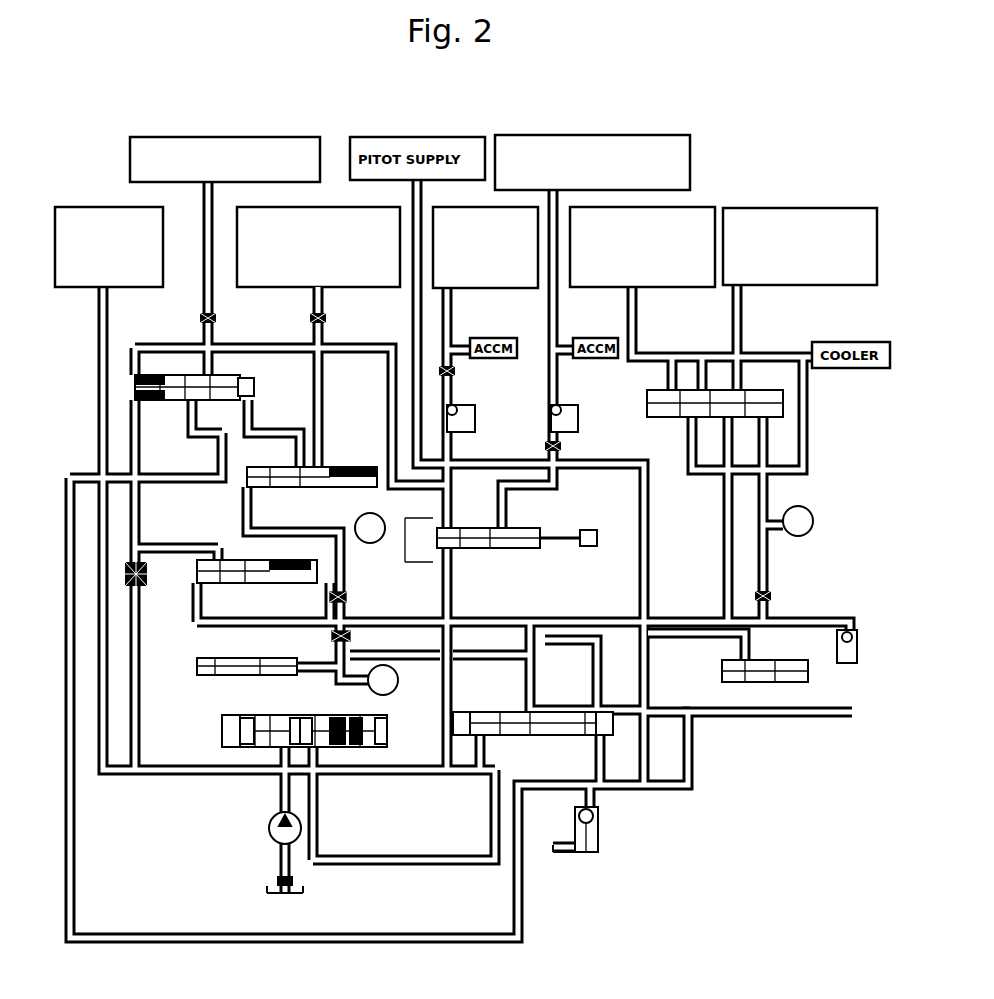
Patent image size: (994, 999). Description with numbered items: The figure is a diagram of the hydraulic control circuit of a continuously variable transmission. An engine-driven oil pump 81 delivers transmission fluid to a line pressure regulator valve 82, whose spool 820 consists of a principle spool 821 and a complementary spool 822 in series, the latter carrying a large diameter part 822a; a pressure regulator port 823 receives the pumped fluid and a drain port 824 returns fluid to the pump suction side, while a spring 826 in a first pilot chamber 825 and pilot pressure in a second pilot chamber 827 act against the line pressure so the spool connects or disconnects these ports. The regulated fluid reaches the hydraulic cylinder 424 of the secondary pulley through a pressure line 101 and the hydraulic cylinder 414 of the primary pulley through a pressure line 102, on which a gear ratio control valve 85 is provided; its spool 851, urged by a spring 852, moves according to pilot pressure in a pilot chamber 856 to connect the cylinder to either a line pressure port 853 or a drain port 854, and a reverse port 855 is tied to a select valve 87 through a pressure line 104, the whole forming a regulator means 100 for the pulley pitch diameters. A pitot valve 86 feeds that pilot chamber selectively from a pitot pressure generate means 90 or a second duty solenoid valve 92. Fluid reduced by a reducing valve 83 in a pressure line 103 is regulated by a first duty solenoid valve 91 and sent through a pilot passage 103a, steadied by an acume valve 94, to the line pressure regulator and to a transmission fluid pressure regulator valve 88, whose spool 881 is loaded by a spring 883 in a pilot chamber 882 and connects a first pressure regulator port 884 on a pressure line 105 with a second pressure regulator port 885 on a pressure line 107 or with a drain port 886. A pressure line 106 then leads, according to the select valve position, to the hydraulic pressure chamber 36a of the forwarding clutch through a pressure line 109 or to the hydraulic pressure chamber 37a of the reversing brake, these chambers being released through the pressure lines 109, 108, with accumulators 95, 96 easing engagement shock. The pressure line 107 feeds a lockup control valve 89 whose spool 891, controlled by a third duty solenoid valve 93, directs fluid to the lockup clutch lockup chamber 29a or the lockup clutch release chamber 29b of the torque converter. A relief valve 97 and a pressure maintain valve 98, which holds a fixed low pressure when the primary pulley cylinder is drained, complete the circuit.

The lockup clutch lockup chamber 29a is at (708, 207).
The lockup clutch release chamber 29b is at (788, 208).
The hydraulic pressure chamber 36a is at (626, 135).
The hydraulic pressure chamber 37a is at (462, 288).
The oil pump 81 is at (272, 836).
The line pressure regulator valve 82 is at (301, 752).
The reducing valve 83 is at (305, 562).
The gear ratio control valve 85 is at (179, 366).
The pitot valve 86 is at (353, 467).
The select valve 87 is at (520, 549).
The transmission fluid pressure regulator valve 88 is at (514, 715).
The lockup control valve 89 is at (790, 384).
The pitot pressure generate means 90 is at (336, 207).
The first duty solenoid valve 91 is at (394, 667).
The second duty solenoid valve 92 is at (370, 544).
The third duty solenoid valve 93 is at (812, 516).
The acume valve 94 is at (200, 657).
The accumulator 95 is at (495, 359).
The accumulator 96 is at (600, 359).
The relief valve 97 is at (728, 680).
The pressure maintain valve 98 is at (606, 824).
The regulator means 100 is at (190, 368).
The pressure line 101 is at (180, 768).
The pressure line 102 is at (140, 630).
The pressure line 103 is at (326, 600).
The pilot passage 103a is at (338, 640).
The pressure line 104 is at (366, 354).
The pressure line 105 is at (398, 776).
The pressure line 106 is at (448, 722).
The pressure line 107 is at (615, 628).
The pressure line 108 is at (442, 322).
The pressure line 109 is at (552, 315).
The hydraulic cylinder 414 is at (233, 137).
The hydraulic cylinder 424 is at (102, 207).
The spool 820 is at (253, 777).
The principle spool 821 is at (222, 722).
The complementary spool 822 is at (300, 750).
The large diameter part 822a is at (363, 742).
The pressure regulator port 823 is at (287, 752).
The drain port 824 is at (306, 750).
The first pilot chamber 825 is at (293, 718).
The spring 826 is at (336, 718).
The second pilot chamber 827 is at (388, 732).
The spool 851 is at (250, 384).
The spring 852 is at (148, 396).
The line pressure port 853 is at (190, 408).
The drain port 854 is at (227, 440).
The reverse port 855 is at (134, 370).
The pilot chamber 856 is at (250, 393).
The spool 881 is at (470, 712).
The pilot chamber 882 is at (562, 713).
The spring 883 is at (600, 737).
The first pressure regulator port 884 is at (525, 736).
The second pressure regulator port 885 is at (527, 678).
The drain port 886 is at (485, 766).
The spool 891 is at (748, 390).